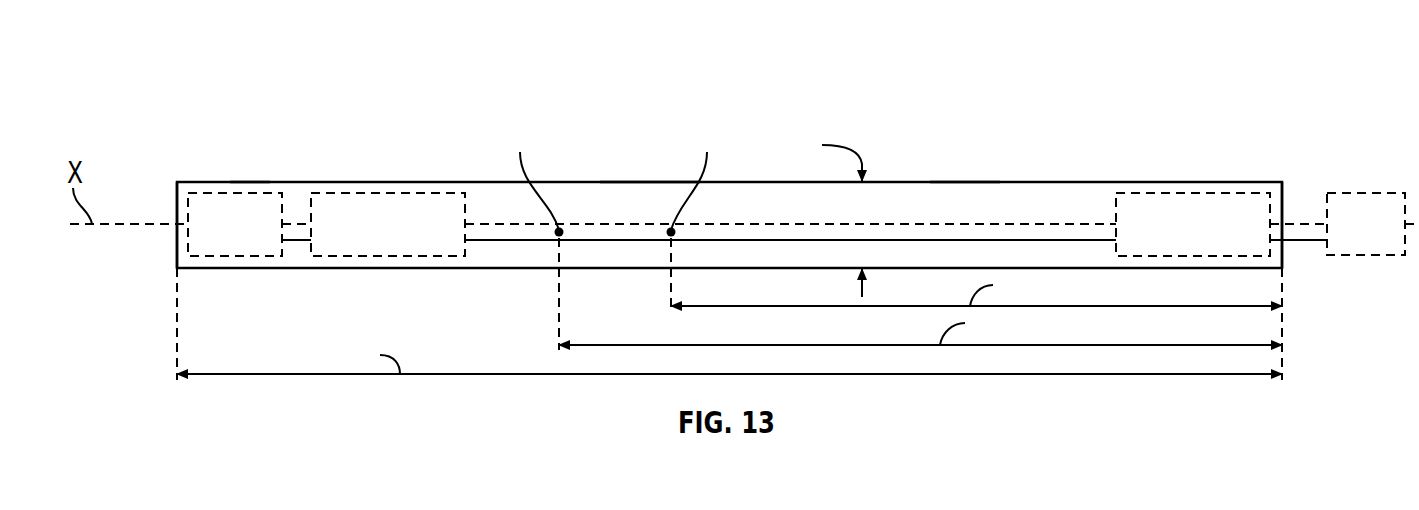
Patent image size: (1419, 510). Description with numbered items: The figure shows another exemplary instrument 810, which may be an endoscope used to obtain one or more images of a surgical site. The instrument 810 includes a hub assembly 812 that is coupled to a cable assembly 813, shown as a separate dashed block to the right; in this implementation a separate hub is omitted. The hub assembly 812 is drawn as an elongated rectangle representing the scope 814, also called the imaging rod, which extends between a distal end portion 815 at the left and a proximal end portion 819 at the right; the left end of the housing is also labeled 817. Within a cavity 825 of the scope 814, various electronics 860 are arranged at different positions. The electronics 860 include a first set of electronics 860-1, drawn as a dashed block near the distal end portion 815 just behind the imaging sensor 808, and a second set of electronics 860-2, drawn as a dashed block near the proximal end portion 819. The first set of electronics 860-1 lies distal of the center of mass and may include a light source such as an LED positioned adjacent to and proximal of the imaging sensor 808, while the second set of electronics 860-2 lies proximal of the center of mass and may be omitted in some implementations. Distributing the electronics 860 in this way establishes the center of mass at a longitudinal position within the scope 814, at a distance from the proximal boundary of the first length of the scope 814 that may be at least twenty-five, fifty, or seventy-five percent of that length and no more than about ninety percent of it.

The instrument 810 is at (163, 82).
The hub assembly 812 is at (614, 181).
The scope 814 is at (638, 182).
The distal end portion 815 is at (247, 182).
The first end of housing 817 is at (177, 198).
The proximal end portion 819 is at (1282, 190).
The imaging sensor 808 is at (221, 181).
The cable assembly 813 is at (1387, 238).
The cavity 825 is at (971, 186).
The electronics 860 is at (387, 181).
The first set of electronics 860-1 is at (388, 224).
The second set of electronics 860-2 is at (1182, 181).